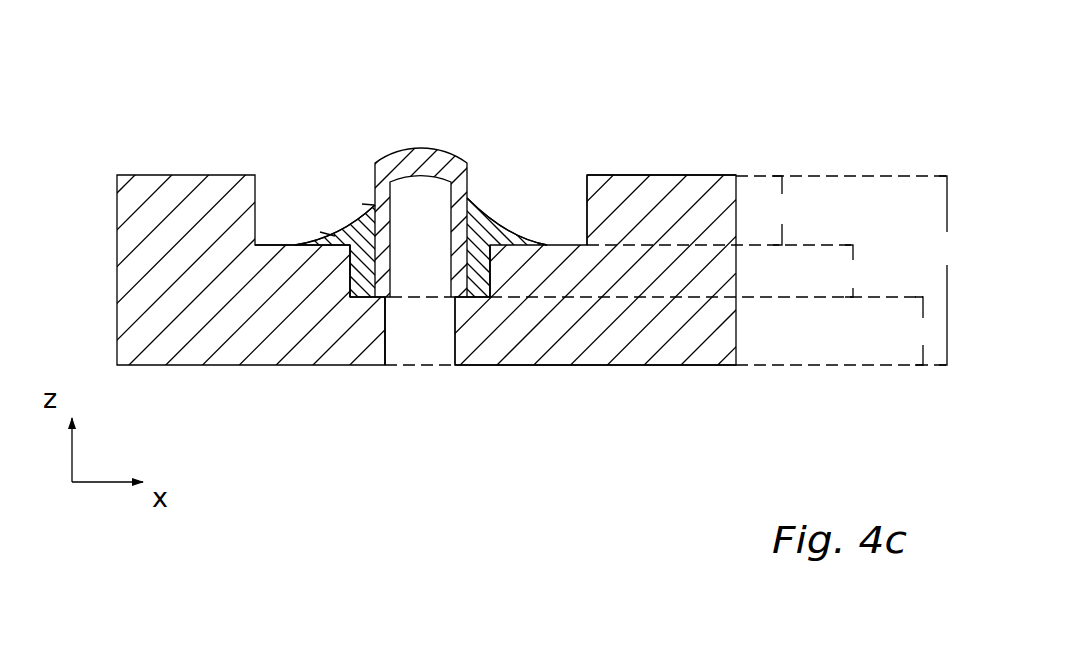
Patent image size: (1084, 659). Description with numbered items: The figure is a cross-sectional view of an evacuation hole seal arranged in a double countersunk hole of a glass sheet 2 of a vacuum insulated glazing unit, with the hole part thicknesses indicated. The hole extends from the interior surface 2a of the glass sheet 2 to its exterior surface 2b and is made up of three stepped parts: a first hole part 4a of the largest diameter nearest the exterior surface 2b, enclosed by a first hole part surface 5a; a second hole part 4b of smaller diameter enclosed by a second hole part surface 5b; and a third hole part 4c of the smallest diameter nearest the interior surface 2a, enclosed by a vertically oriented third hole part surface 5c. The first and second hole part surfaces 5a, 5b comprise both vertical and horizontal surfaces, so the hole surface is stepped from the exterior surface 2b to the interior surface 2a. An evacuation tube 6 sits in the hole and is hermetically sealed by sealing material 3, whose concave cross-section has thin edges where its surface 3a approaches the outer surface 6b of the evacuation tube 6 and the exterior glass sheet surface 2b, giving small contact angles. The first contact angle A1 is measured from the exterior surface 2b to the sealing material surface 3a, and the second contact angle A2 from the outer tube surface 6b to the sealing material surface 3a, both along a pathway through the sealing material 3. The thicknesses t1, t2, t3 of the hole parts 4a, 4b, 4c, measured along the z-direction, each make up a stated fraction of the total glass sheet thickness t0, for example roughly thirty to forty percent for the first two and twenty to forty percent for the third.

The glass sheet 2 is at (697, 208).
The interior surface of the glass sheet 2a is at (657, 369).
The exterior surface of the glass sheet 2b is at (680, 171).
The sealing material 3 is at (495, 224).
The sealing material surface 3a is at (487, 222).
The first hole part 4a is at (292, 240).
The second hole part 4b is at (349, 270).
The third hole part 4c is at (437, 355).
The first hole part surface 5a is at (586, 203).
The second hole part surface 5b is at (492, 268).
The third hole part surface 5c is at (387, 355).
The evacuation tube 6 is at (462, 163).
The outer surface of the evacuation tube 6b is at (371, 203).
The first contact angle A1 is at (327, 236).
The second contact angle A2 is at (368, 207).
The glass sheet thickness t0 is at (949, 270).
The first hole part thickness t1 is at (782, 210).
The second hole part thickness t2 is at (851, 271).
The third hole part thickness t3 is at (924, 331).